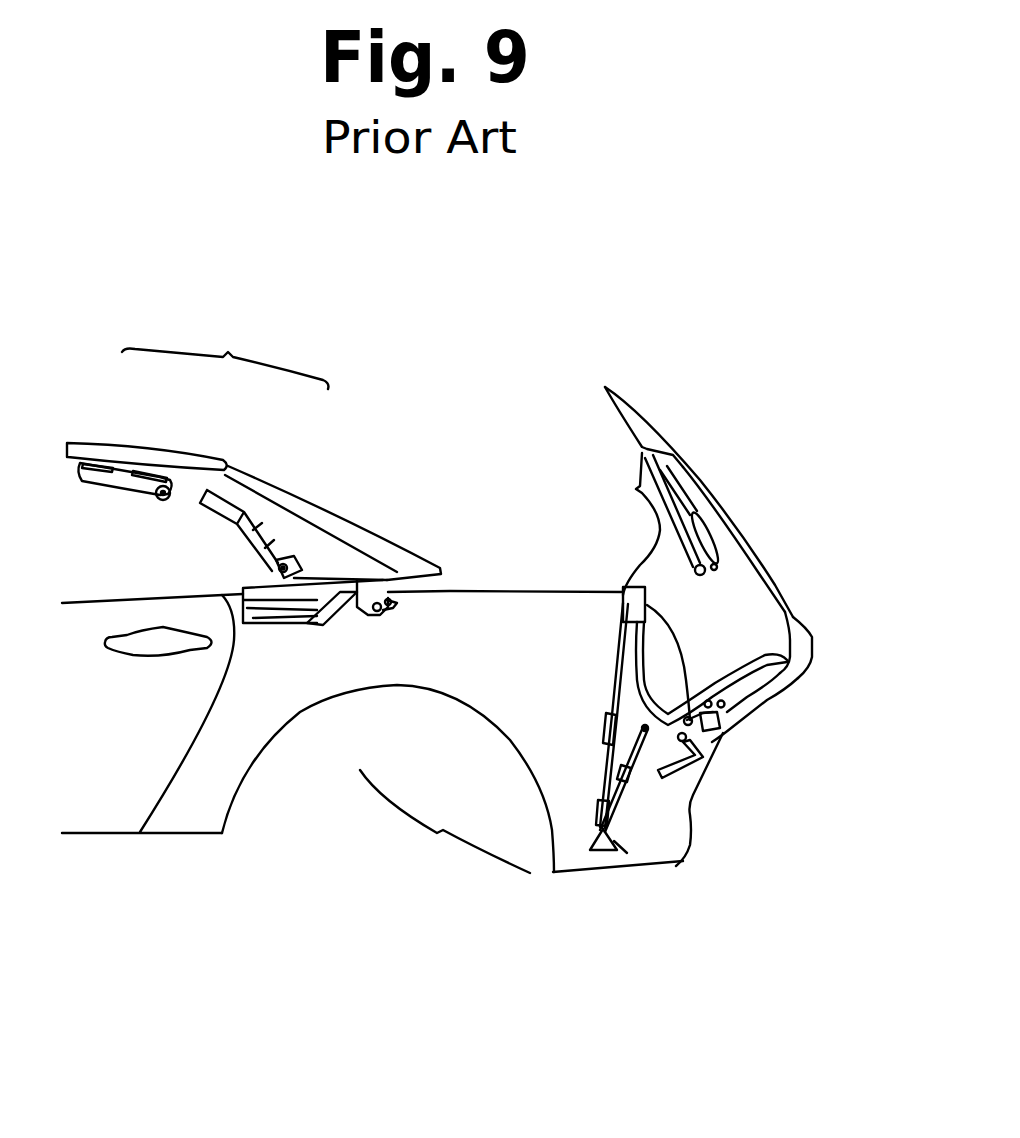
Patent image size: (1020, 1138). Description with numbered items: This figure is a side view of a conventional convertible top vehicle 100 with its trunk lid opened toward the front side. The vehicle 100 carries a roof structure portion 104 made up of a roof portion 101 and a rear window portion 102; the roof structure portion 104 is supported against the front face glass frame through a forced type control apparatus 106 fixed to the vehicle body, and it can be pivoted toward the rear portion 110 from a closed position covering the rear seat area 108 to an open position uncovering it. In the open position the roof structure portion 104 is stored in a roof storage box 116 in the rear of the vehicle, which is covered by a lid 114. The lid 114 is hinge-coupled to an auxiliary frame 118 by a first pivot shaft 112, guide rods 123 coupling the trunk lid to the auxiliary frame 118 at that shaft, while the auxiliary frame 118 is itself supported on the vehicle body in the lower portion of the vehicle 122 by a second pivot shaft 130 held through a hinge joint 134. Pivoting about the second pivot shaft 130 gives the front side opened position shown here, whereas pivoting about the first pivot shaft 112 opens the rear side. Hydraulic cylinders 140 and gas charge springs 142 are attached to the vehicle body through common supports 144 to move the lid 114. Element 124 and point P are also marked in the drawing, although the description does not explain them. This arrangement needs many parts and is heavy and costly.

The vehicle 100 is at (450, 445).
The roof portion 101 is at (152, 447).
The rear window portion 102 is at (280, 493).
The roof structure portion 104 is at (225, 344).
The forced type control apparatus 106 is at (175, 518).
The rear seat area 108 is at (157, 743).
The rear portion 110 is at (388, 790).
The first pivot shaft 112 is at (648, 446).
The lid 114 is at (751, 547).
The roof storage box 116 is at (528, 650).
The auxiliary frame 118 is at (611, 680).
The lower portion of the vehicle 122 is at (684, 813).
The guide rods 123 is at (644, 512).
The cable 124 is at (657, 643).
The second pivot shaft 130 is at (740, 660).
The hinge joint 134 is at (693, 767).
The hydraulic cylinders 140 is at (600, 763).
The gas charge springs 142 is at (622, 797).
The common supports 144 is at (613, 841).
The pivot point P is at (703, 727).